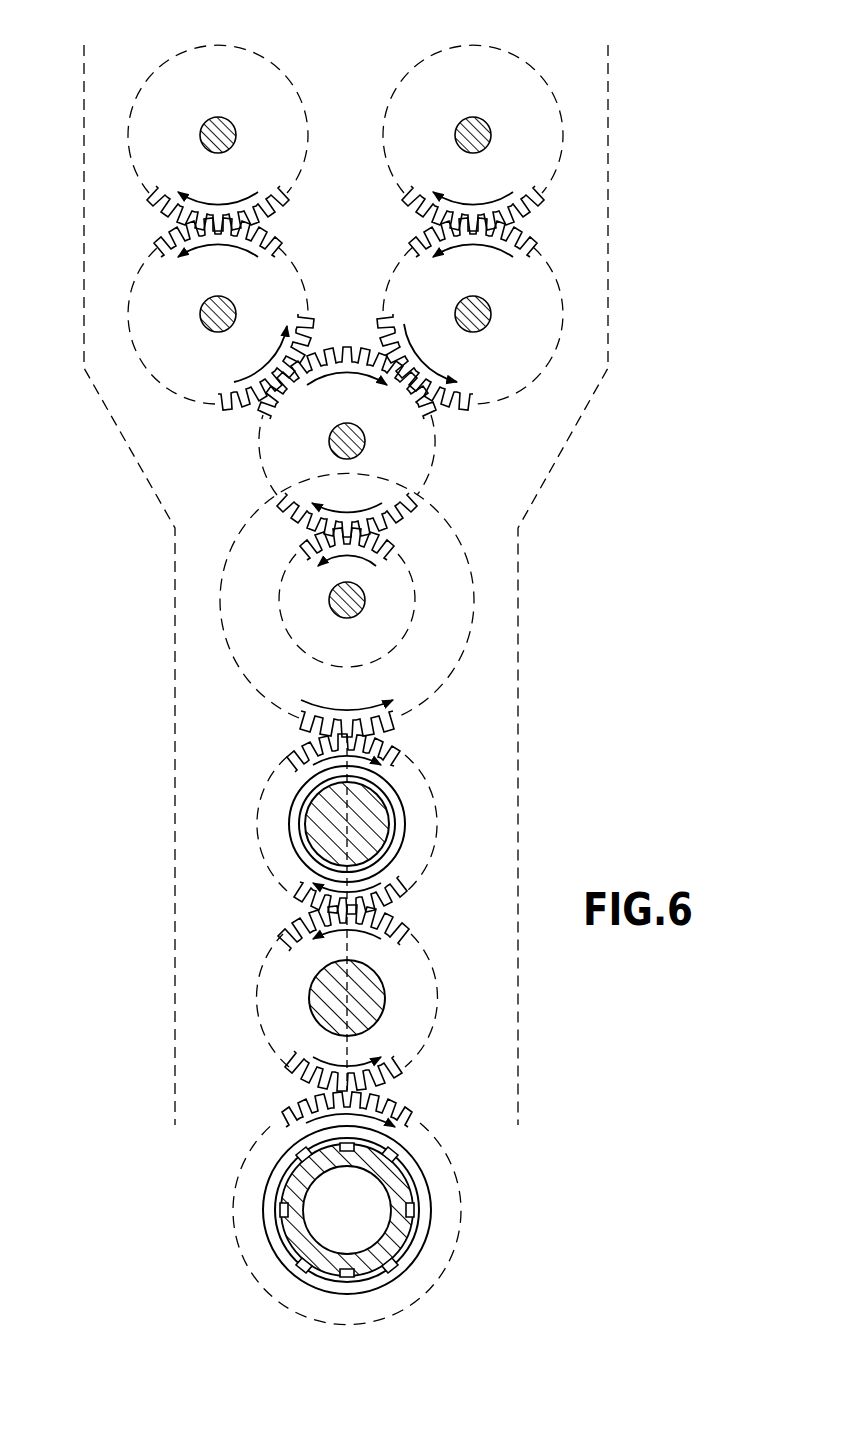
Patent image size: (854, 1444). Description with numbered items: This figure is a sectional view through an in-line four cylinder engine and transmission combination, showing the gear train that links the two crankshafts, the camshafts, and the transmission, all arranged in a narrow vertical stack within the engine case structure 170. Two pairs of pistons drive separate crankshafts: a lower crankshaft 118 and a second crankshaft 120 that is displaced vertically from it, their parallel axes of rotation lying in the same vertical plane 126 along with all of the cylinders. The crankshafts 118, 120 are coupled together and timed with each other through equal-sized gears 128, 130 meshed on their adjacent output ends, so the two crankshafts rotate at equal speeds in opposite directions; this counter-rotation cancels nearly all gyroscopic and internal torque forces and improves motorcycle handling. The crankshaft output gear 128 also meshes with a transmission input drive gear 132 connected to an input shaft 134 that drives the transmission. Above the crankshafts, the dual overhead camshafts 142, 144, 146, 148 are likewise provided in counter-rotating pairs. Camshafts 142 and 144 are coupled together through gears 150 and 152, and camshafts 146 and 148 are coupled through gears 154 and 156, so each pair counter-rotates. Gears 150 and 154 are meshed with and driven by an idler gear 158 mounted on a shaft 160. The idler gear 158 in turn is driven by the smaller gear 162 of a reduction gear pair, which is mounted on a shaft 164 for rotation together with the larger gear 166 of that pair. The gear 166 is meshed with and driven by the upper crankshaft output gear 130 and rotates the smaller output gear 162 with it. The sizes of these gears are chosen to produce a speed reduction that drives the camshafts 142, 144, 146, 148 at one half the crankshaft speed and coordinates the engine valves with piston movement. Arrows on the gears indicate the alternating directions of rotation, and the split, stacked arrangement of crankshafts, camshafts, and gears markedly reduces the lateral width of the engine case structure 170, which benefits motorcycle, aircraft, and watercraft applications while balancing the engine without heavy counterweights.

The crankshaft 118 is at (313, 1005).
The second crankshaft 120 is at (388, 805).
The vertical plane 126 is at (347, 947).
The crankshaft output gear 128 is at (267, 953).
The upper crankshaft output gear 130 is at (268, 778).
The transmission input drive gear 132 is at (235, 1212).
The input shaft 134 is at (408, 1228).
The camshaft 142 is at (205, 327).
The camshaft 144 is at (237, 118).
The camshaft 146 is at (487, 327).
The camshaft 148 is at (492, 118).
The gear 150 is at (310, 285).
The gear 152 is at (297, 90).
The gear 154 is at (560, 282).
The gear 156 is at (553, 90).
The idler gear 158 is at (258, 457).
The shaft 160 is at (367, 437).
The smaller gear of reduction gear pair 162 is at (412, 572).
The shaft 164 is at (330, 597).
The larger gear of reduction gear pair 166 is at (230, 547).
The engine case structure 170 is at (518, 686).